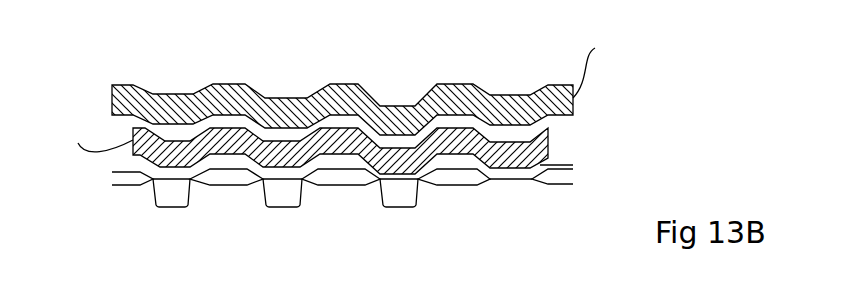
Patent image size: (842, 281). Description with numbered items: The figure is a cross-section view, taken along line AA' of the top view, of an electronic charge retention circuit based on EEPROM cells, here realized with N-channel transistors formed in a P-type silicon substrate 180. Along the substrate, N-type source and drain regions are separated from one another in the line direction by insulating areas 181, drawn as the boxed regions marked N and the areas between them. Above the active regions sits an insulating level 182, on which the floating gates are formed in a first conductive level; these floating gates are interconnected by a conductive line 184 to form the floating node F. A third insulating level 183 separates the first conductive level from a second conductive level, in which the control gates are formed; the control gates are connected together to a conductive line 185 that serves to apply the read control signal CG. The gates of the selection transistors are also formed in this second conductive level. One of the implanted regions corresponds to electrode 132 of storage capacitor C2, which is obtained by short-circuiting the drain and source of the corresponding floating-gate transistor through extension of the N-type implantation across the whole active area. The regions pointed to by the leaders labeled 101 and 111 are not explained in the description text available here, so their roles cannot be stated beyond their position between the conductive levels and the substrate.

The P-type silicon substrate 180 is at (124, 226).
The insulating areas 181 is at (228, 181).
The insulating level 182 is at (573, 165).
The third insulating level 183 is at (545, 120).
The conductive line 184 is at (550, 138).
The conductive line 185 is at (133, 92).
The electrode 132 is at (190, 178).
The contact 101 is at (302, 178).
The contact 111 is at (411, 178).